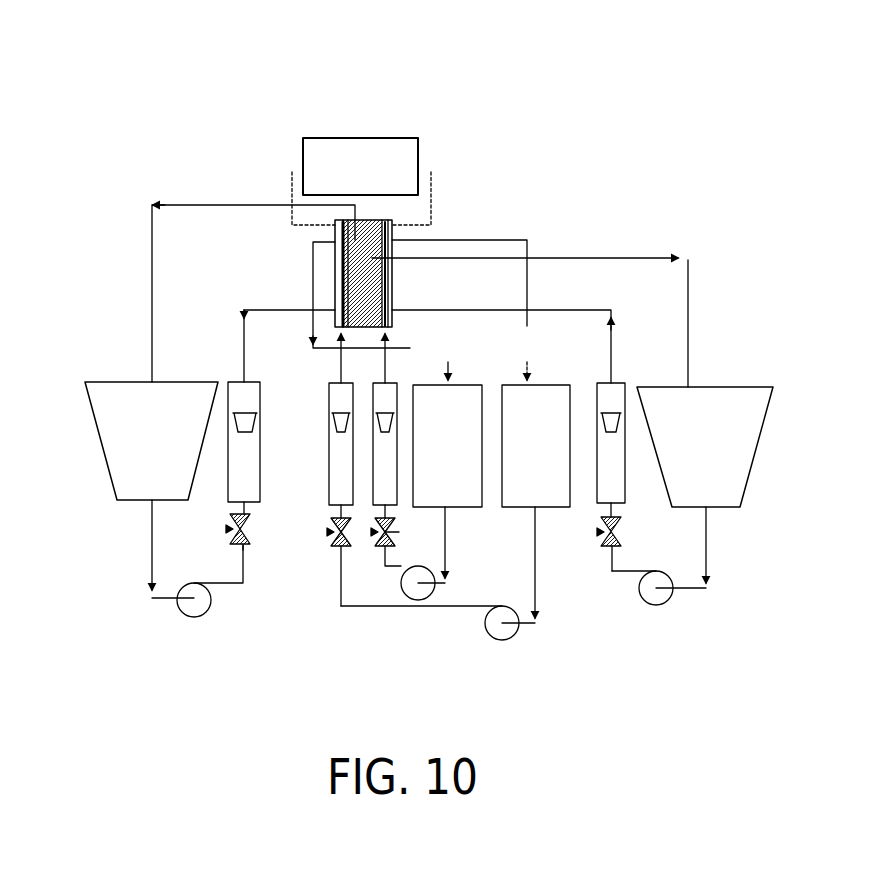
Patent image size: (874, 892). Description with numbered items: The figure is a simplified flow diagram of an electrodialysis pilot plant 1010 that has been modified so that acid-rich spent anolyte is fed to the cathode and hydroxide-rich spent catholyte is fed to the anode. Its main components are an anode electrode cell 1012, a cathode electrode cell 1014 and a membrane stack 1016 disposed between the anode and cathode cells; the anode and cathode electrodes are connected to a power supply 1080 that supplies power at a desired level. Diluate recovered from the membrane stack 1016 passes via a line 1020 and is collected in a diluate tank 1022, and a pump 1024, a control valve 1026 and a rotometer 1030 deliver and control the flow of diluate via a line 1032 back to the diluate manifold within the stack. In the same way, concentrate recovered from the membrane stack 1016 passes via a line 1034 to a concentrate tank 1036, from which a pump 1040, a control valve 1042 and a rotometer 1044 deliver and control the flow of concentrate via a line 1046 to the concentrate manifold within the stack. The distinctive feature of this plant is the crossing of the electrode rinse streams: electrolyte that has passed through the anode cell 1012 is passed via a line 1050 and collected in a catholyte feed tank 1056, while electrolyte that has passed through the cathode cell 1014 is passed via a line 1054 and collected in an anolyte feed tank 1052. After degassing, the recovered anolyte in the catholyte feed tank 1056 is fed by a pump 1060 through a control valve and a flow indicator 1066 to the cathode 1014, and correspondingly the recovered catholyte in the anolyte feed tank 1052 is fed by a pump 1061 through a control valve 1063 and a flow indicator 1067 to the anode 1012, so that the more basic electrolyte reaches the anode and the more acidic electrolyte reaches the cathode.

The electrodialysis pilot plant 1010 is at (786, 180).
The anode electrode cell 1012 is at (335, 232).
The cathode electrode cell 1014 is at (392, 232).
The membrane stack 1016 is at (348, 277).
The line 1020 is at (176, 206).
The diluate tank 1022 is at (151, 441).
The pump 1024 is at (184, 612).
The control valve 1026 is at (253, 530).
The rotometer 1030 is at (259, 487).
The line 1032 is at (247, 314).
The line 1034 is at (690, 350).
The concentrate tank 1036 is at (705, 447).
The pump 1040 is at (650, 605).
The control valve 1042 is at (602, 546).
The rotometer 1044 is at (613, 386).
The line 1046 is at (546, 310).
The line 1050 is at (327, 350).
The anolyte feed tank 1052 is at (536, 418).
The line 1054 is at (527, 243).
The catholyte feed tank 1056 is at (447, 418).
The pump 1060 is at (434, 596).
The pump 1061 is at (495, 640).
The control valve 1063 is at (337, 549).
The flow indicator 1066 is at (386, 384).
The flow indicator 1067 is at (329, 403).
The power supply 1080 is at (346, 138).